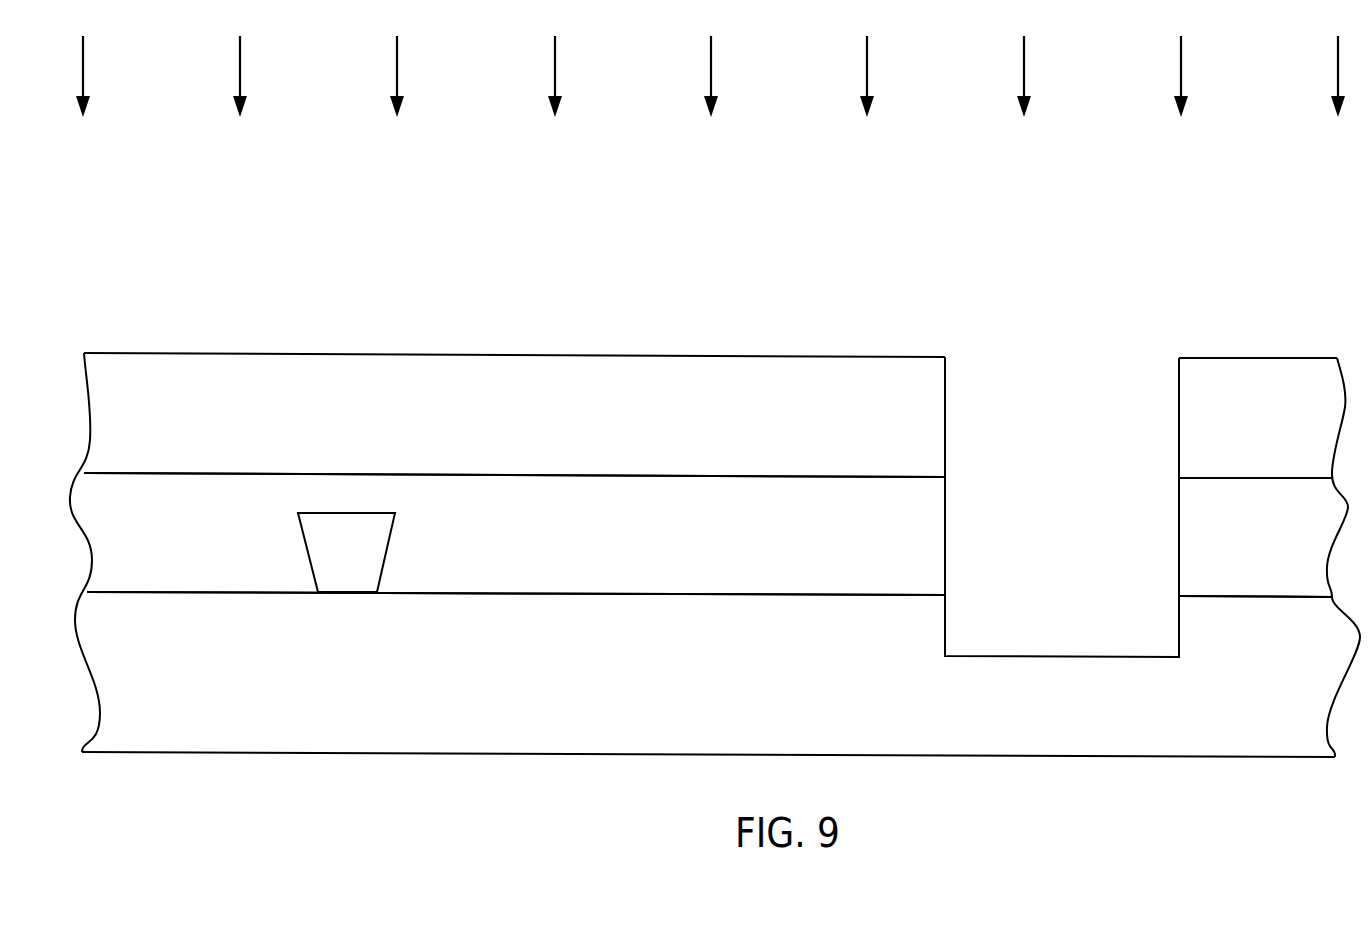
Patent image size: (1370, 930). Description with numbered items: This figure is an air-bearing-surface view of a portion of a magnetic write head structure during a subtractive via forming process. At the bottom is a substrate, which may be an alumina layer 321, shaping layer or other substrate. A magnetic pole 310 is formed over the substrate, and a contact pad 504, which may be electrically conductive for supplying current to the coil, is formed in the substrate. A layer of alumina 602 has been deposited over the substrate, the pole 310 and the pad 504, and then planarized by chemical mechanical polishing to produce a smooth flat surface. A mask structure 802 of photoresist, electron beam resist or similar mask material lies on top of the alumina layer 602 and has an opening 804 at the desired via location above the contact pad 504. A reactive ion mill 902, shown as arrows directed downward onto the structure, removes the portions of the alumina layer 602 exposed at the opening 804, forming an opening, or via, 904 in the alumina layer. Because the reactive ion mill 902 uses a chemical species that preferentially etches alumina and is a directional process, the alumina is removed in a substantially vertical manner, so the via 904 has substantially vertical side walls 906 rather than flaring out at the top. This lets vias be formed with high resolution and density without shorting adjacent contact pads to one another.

The reactive ion mill 902 is at (712, 58).
The mask structure 802 is at (667, 409).
The alumina layer 602 is at (788, 517).
The alumina layer 321 is at (710, 676).
The magnetic pole 310 is at (338, 553).
The opening 804 is at (1080, 443).
The side walls 906 is at (945, 500).
The via 904 is at (1100, 557).
The contact pad 504 is at (1138, 624).